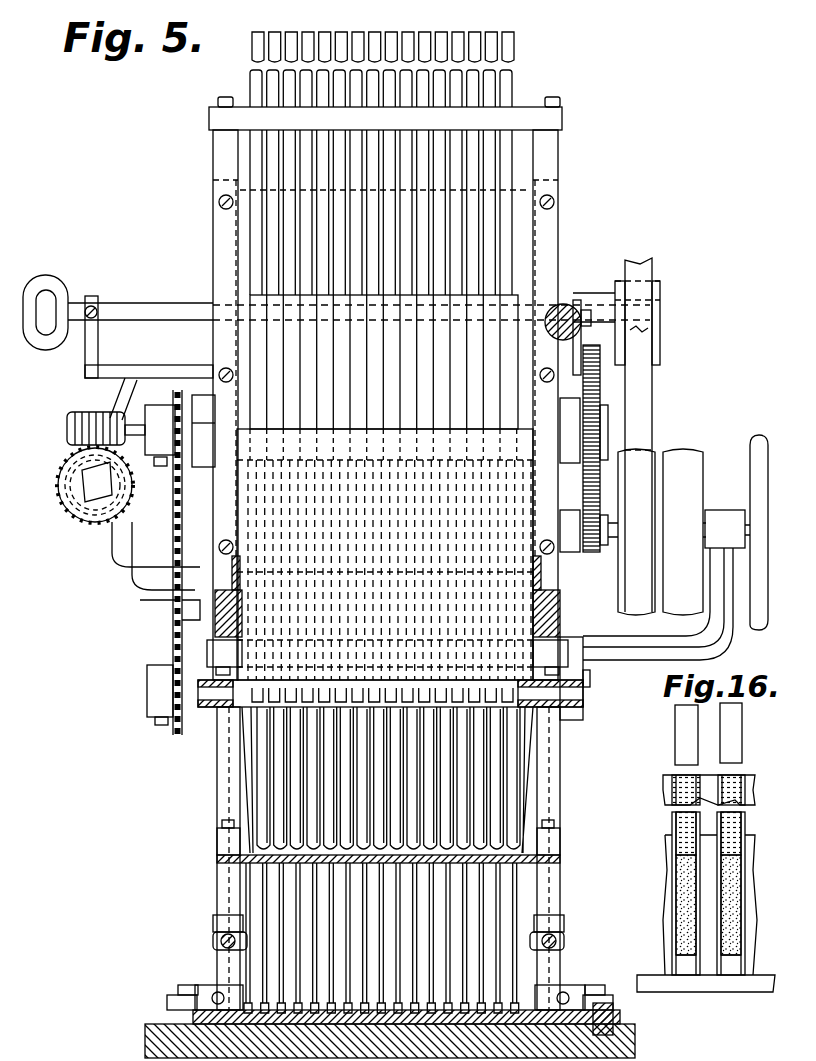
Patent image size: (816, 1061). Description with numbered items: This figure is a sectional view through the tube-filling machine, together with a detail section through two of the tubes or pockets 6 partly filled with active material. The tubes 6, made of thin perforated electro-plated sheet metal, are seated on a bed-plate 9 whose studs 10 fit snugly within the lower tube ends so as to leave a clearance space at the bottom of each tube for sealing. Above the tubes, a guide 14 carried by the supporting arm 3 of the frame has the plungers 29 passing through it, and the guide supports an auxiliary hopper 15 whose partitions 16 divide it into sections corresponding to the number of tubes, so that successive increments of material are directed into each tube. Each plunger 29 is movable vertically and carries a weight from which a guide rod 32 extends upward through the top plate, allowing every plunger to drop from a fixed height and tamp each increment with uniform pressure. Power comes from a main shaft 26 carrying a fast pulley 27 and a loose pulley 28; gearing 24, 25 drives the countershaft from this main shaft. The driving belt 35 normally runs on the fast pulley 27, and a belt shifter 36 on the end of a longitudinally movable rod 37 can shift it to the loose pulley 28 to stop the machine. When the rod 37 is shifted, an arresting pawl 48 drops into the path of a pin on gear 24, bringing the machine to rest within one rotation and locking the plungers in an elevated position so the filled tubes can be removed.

In FIG. 5, the supporting arm 3 is at (220, 845).
In FIG. 16, the tube 6 is at (672, 819).
In FIG. 16, the bed-plate 9 is at (686, 984).
In FIG. 16, the stud 10 is at (708, 963).
In FIG. 5, the guide 14 is at (230, 864).
In FIG. 5, the hopper 15 is at (246, 778).
In FIG. 5, the partition 16 is at (500, 772).
In FIG. 5, the gearing 24 is at (598, 382).
In FIG. 5, the gearing 25 is at (590, 552).
In FIG. 5, the main shaft 26 is at (614, 540).
In FIG. 5, the fast pulley 27 is at (660, 450).
In FIG. 5, the loose pulley 28 is at (703, 450).
In FIG. 16, the plunger 29 is at (675, 737).
In FIG. 5, the guide rod 32 is at (290, 90).
In FIG. 5, the driving belt 35 is at (640, 397).
In FIG. 5, the belt shifter 36 is at (660, 318).
In FIG. 5, the rod 37 is at (171, 311).
In FIG. 5, the arresting pawl 48 is at (560, 312).